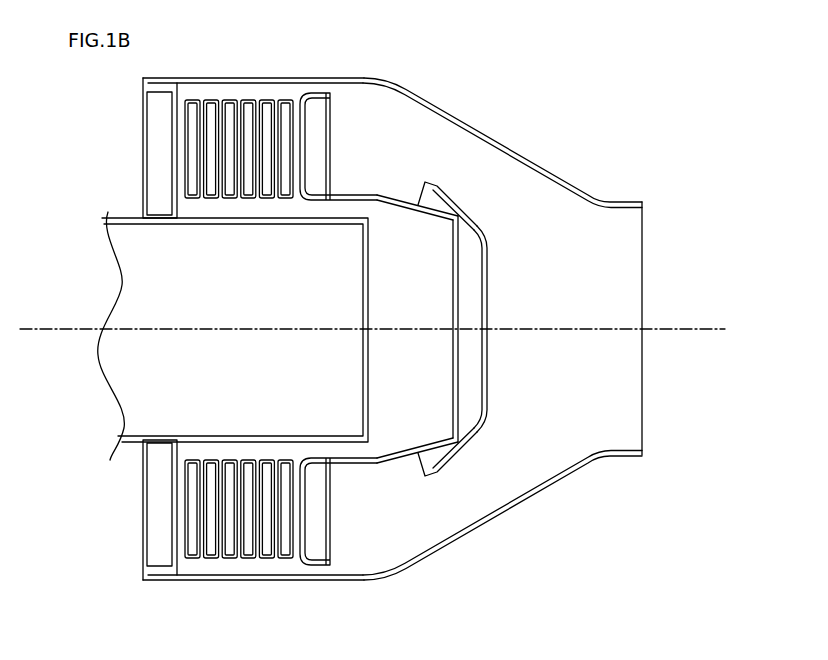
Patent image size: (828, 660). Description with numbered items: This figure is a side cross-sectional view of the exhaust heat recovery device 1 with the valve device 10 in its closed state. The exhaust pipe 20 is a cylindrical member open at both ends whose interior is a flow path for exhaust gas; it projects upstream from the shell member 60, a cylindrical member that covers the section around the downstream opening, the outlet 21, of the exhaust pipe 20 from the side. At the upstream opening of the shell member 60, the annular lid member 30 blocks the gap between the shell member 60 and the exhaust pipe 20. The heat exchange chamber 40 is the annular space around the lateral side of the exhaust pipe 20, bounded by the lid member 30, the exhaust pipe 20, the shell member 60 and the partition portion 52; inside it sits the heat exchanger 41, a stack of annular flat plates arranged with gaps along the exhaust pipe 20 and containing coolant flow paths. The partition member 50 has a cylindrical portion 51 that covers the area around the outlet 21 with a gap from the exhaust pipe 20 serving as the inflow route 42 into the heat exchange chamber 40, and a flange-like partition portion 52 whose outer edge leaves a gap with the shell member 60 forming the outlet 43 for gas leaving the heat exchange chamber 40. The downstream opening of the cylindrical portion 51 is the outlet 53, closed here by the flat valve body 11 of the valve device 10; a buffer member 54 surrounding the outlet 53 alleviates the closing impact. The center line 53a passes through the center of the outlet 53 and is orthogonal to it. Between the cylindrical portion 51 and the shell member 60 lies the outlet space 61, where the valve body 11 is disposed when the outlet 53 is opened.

The exhaust heat recovery device 1 is at (593, 68).
The valve device 10 is at (538, 329).
The valve body 11 is at (488, 262).
The exhaust pipe 20 is at (193, 230).
The outlet 21 is at (363, 318).
The lid member 30 is at (155, 168).
The heat exchange chamber 40 is at (243, 329).
The heat exchanger 41 is at (272, 204).
The inflow route 42 is at (343, 208).
The outlet 43 is at (332, 78).
The partition member 50 is at (433, 326).
The cylindrical portion 51 is at (380, 206).
The partition portion 52 is at (313, 138).
The outlet 53 is at (452, 300).
The center line 53a is at (556, 332).
The buffer member 54 is at (458, 207).
The shell member 60 is at (507, 142).
The outlet space 61 is at (387, 158).